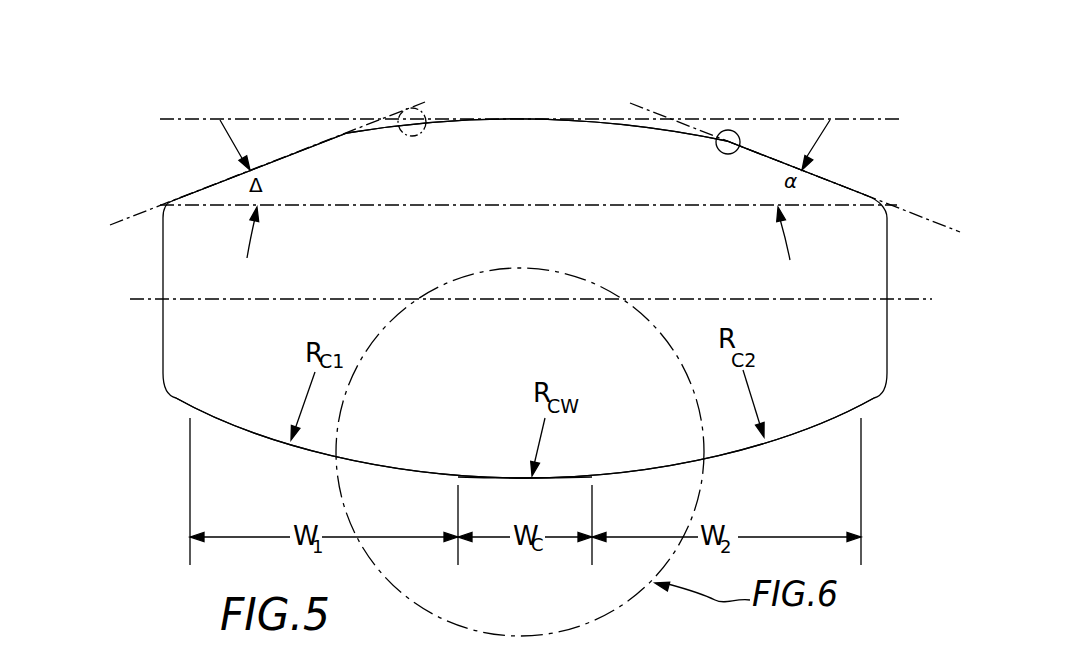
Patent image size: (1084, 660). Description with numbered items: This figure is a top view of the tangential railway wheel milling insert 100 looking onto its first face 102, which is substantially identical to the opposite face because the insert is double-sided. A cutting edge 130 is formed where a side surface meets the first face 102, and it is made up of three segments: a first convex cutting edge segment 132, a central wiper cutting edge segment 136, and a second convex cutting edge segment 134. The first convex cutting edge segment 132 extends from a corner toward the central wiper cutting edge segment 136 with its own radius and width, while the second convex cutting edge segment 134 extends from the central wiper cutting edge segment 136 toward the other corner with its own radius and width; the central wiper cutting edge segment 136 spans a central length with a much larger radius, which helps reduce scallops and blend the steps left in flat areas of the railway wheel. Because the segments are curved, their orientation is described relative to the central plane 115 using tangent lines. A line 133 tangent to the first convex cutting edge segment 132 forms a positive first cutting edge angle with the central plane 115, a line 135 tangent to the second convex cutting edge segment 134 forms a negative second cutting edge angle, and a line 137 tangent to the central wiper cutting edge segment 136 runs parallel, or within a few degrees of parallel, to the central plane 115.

The milling insert 100 is at (168, 72).
The first face 102 is at (188, 347).
The central plane 115 is at (162, 202).
The cutting edge 130 is at (463, 135).
The first convex cutting edge segment 132 is at (725, 154).
The line tangent to the first convex cutting edge segment 133 is at (648, 108).
The second convex cutting edge segment 134 is at (347, 132).
The line tangent to the second convex cutting edge segment 135 is at (400, 106).
The central wiper cutting edge segment 136 is at (529, 125).
The line tangent to the central wiper cutting edge segment 137 is at (424, 108).